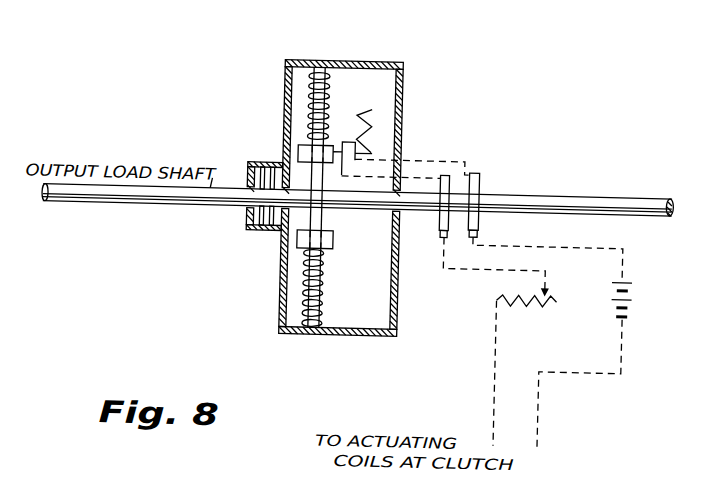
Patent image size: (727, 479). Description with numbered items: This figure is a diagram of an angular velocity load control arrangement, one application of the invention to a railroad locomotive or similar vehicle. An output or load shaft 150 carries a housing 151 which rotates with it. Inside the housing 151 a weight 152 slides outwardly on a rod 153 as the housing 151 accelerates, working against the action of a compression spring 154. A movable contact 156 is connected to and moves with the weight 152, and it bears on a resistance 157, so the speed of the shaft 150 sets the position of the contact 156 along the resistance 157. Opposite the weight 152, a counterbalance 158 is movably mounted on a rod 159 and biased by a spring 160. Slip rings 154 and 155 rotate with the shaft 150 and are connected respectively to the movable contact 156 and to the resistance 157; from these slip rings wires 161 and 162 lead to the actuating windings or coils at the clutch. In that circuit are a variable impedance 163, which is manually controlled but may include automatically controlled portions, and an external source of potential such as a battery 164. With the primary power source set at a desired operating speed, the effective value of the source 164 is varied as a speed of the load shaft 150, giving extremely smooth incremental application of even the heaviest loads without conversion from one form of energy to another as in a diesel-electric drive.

The output or load shaft 150 is at (180, 208).
The housing 151 is at (391, 337).
The weight 152 is at (297, 154).
The rod 153 is at (334, 64).
The compression spring / slip ring 154 is at (308, 108).
The slip ring 155 is at (481, 183).
The movable contact 156 is at (352, 140).
The resistance 157 is at (366, 142).
The counterbalance 158 is at (335, 242).
The rod 159 is at (327, 273).
The spring 160 is at (324, 296).
The wire 161 is at (497, 396).
The wire 162 is at (545, 401).
The variable impedance 163 is at (534, 290).
The battery 164 is at (636, 305).